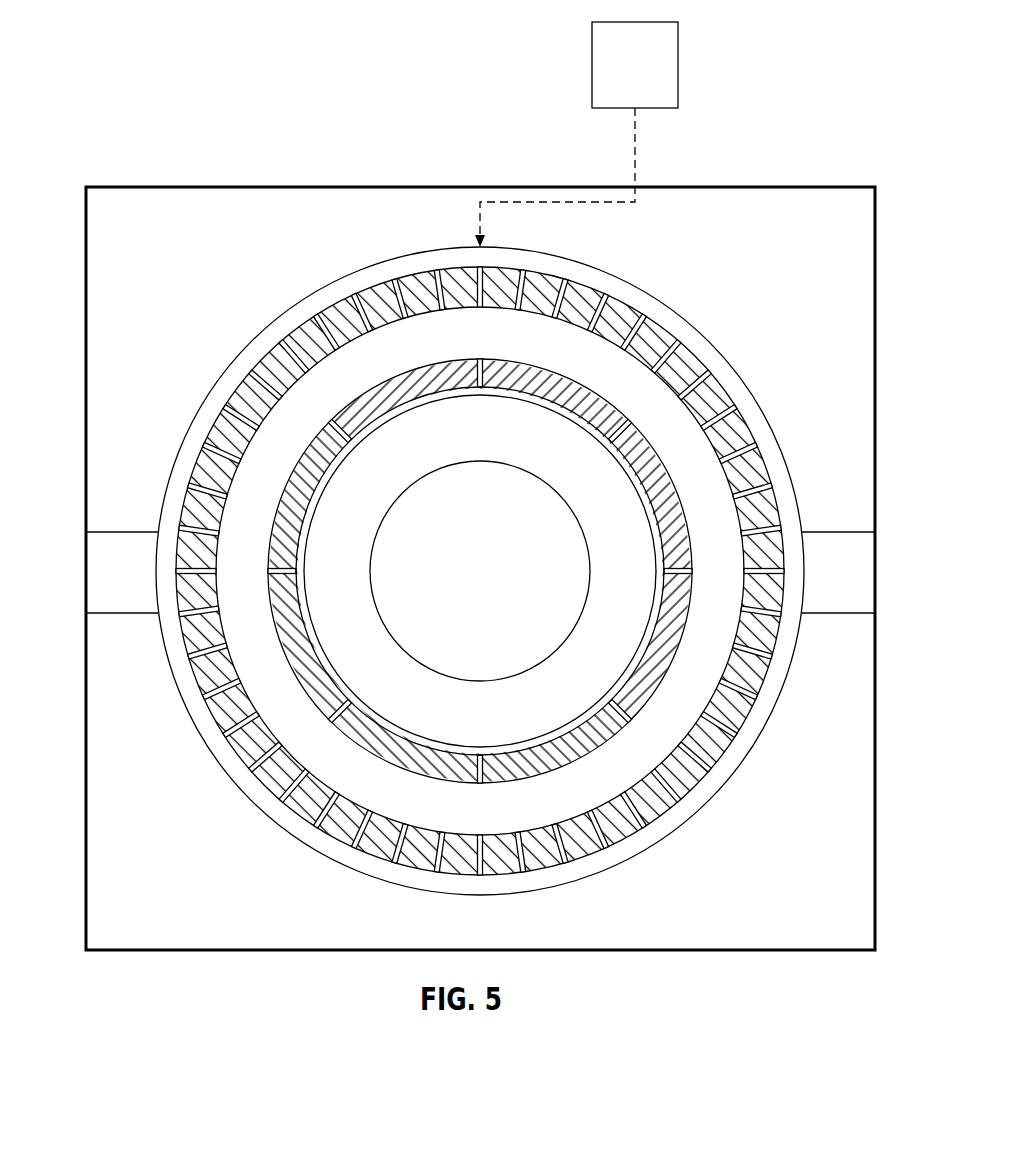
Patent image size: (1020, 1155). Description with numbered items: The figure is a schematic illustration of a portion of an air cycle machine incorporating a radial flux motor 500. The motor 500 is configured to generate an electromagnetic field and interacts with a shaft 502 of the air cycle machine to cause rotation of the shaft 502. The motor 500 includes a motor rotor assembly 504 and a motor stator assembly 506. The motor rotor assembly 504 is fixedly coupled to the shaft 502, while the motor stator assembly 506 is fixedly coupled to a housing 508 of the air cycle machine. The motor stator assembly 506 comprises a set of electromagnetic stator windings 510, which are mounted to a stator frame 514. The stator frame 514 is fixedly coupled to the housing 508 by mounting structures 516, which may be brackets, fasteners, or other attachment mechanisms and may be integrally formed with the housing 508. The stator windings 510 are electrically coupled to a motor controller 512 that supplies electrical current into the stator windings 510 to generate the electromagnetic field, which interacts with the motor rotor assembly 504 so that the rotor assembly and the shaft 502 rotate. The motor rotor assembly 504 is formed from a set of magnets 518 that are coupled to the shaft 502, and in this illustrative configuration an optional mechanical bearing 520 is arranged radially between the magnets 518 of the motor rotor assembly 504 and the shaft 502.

The motor 500 is at (116, 22).
The shaft 502 is at (380, 641).
The motor rotor assembly 504 is at (668, 456).
The motor stator assembly 506 is at (383, 257).
The housing 508 is at (163, 186).
The stator windings 510 is at (650, 332).
The motor controller 512 is at (657, 78).
The stator frame 514 is at (262, 348).
The mounting structures 516 is at (102, 573).
The magnets 518 is at (272, 632).
The mechanical bearing 520 is at (468, 390).